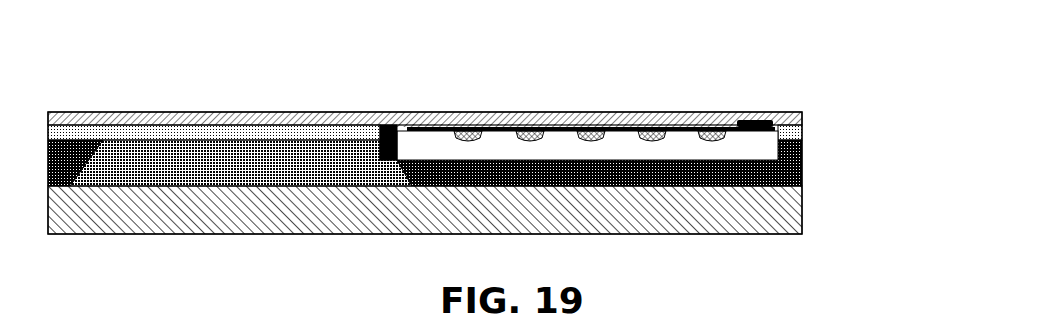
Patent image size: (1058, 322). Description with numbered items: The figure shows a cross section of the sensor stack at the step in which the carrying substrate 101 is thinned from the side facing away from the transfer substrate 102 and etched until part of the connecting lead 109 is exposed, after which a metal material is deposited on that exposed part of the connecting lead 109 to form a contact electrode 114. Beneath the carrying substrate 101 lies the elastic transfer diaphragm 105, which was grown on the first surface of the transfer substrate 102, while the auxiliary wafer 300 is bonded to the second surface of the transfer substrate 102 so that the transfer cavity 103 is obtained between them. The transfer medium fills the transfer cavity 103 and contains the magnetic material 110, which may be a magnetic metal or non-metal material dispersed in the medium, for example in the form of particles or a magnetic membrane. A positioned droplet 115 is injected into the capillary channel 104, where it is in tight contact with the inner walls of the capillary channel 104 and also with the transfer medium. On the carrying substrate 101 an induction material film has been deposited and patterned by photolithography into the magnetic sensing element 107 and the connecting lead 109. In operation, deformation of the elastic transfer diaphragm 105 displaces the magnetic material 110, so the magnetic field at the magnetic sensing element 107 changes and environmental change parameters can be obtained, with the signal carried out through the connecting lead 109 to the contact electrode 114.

The carrying substrate 101 is at (805, 122).
The elastic transfer diaphragm 105 is at (805, 136).
The transfer substrate 102 is at (805, 163).
The auxiliary wafer 300 is at (805, 210).
The magnetic material 110 is at (193, 152).
The transfer cavity 103 is at (330, 162).
The positioned droplet 115 is at (399, 124).
The capillary channel 104 is at (497, 147).
The magnetic sensing element 107 is at (578, 127).
The connecting lead 109 is at (688, 127).
The contact electrode 114 is at (757, 120).